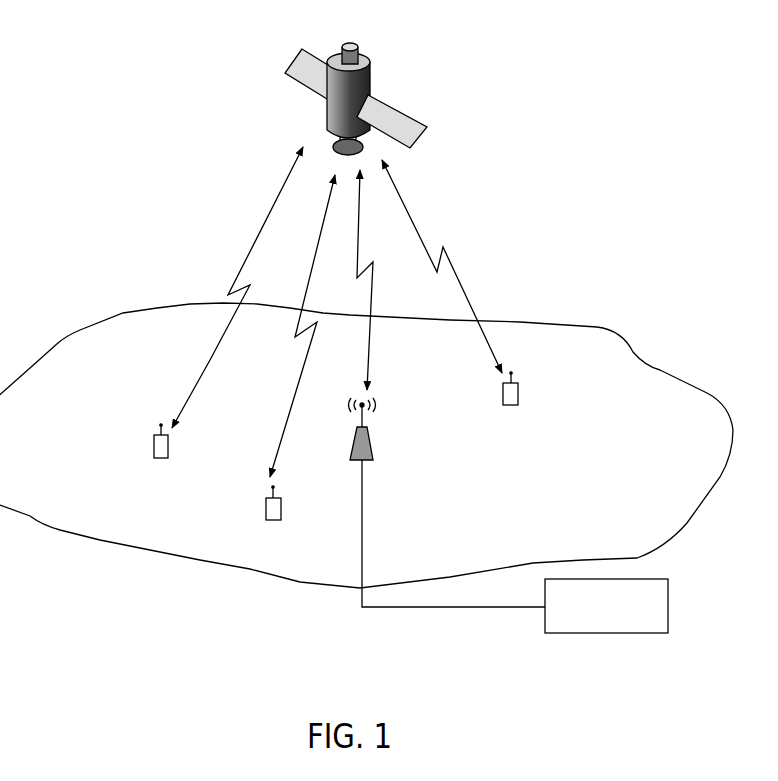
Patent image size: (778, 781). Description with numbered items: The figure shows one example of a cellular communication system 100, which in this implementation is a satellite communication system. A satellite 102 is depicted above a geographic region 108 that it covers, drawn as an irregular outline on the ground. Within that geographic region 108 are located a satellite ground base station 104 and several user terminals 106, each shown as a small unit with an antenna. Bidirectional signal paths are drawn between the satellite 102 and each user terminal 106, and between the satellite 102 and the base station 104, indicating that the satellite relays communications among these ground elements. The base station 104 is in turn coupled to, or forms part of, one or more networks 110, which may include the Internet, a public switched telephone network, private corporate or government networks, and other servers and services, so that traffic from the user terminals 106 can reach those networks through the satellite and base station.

The cellular communication system 100 is at (145, 68).
The satellite 102 is at (398, 75).
The satellite ground base station 104 is at (368, 442).
The user terminal 106 is at (153, 444).
The geographic region 108 is at (107, 323).
The network 110 is at (607, 635).